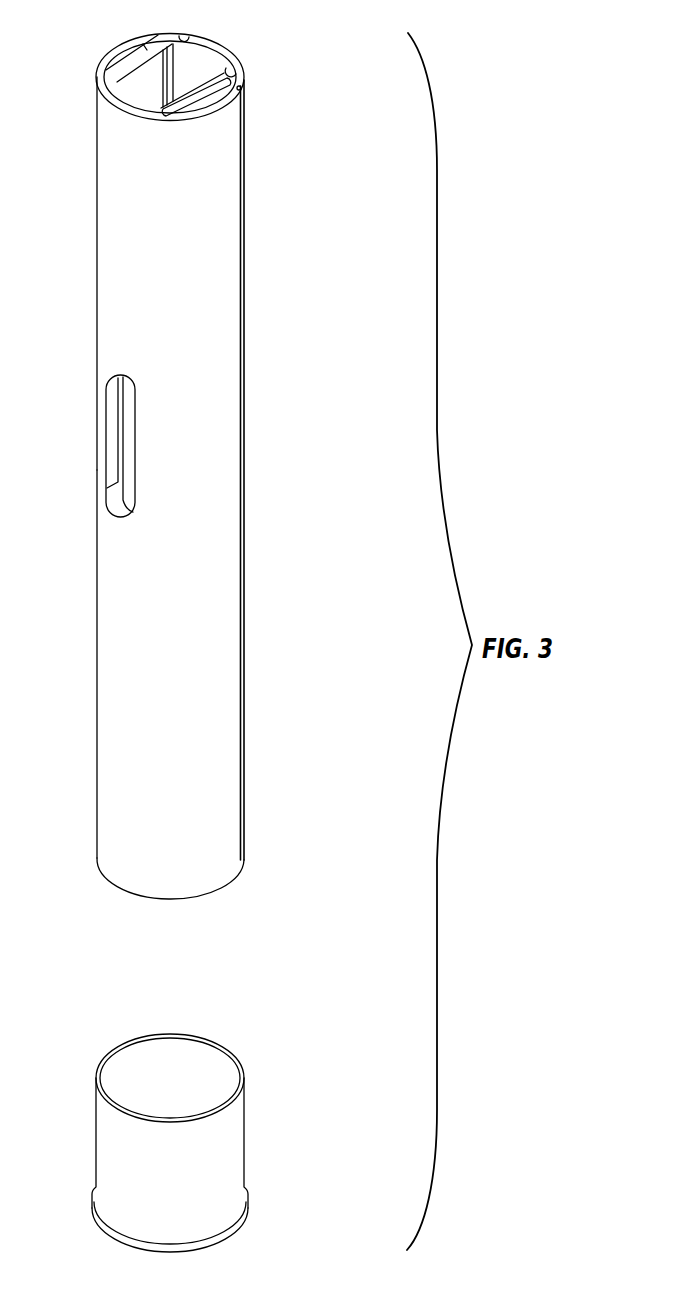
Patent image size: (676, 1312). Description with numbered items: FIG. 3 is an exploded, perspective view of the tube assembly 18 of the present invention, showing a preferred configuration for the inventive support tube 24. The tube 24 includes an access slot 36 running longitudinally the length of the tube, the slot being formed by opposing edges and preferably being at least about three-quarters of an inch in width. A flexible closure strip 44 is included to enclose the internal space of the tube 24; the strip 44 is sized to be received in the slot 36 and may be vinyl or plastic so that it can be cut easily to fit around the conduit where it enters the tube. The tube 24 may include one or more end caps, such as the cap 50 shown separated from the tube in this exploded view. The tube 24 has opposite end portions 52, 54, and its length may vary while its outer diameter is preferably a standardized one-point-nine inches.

The support tube 18 is at (311, 230).
The support tube 24 is at (217, 763).
The access slot 36 is at (240, 68).
The flexible closure strip 44 is at (215, 38).
The end cap 50 is at (244, 1140).
The first end portion 52 is at (97, 132).
The second end portion 54 is at (97, 825).